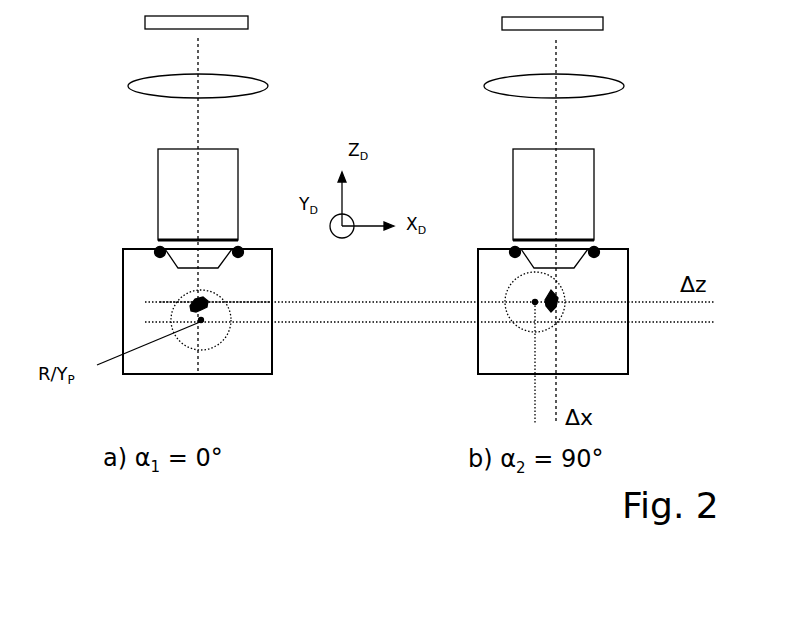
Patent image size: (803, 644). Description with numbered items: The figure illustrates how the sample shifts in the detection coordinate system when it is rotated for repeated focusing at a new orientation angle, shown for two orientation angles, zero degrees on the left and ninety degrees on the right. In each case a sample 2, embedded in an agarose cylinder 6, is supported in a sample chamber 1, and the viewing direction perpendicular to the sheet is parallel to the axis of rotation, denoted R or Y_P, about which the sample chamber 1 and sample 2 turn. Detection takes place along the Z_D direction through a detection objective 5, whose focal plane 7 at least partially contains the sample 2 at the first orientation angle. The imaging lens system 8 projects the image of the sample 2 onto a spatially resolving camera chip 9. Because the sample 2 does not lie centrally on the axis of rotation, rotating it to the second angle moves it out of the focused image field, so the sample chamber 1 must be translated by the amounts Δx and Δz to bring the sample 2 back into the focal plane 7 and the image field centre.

The sample chamber 1 is at (218, 374).
The sample 2 is at (187, 310).
The detection objective 5 is at (178, 187).
The agarose cylinder 6 is at (230, 337).
The focal plane 7 is at (245, 308).
The imaging lens system 8 is at (170, 85).
The camera chip 9 is at (248, 23).